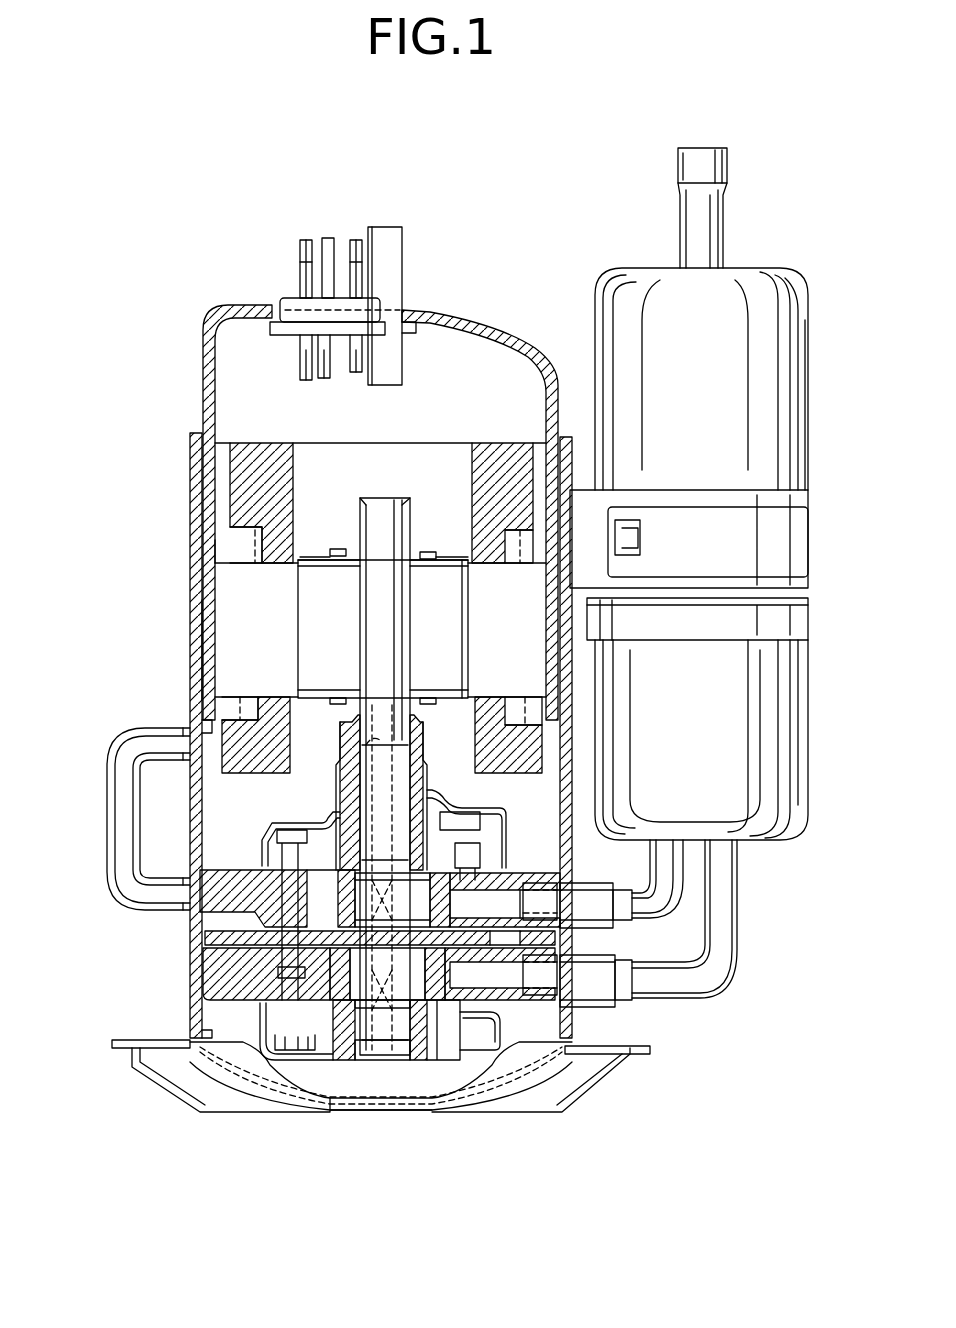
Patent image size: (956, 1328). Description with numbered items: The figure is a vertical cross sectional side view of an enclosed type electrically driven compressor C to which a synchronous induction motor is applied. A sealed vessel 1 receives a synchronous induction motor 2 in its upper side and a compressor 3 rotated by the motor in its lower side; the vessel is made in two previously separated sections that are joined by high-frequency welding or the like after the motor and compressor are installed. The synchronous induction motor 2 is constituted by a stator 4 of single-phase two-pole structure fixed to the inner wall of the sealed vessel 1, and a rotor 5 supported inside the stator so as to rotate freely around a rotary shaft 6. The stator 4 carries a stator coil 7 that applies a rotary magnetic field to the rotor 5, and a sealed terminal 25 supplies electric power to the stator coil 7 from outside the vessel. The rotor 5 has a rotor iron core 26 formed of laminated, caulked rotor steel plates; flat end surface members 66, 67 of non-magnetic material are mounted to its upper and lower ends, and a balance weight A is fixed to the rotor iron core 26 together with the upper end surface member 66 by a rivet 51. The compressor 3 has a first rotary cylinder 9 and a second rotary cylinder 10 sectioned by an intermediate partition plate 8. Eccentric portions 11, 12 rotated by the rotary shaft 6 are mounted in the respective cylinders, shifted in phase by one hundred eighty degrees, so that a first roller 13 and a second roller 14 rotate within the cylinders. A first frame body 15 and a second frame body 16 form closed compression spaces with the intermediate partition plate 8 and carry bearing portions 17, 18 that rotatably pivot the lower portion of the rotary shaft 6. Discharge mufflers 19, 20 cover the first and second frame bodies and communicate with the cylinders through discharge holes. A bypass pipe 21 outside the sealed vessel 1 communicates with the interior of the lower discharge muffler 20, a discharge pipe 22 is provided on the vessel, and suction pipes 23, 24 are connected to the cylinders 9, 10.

The sealed vessel 1 is at (215, 570).
The synchronous induction motor 2 is at (233, 603).
The compressor 3 is at (556, 835).
The stator 4 is at (215, 622).
The rotor 5 is at (315, 682).
The rotary shaft 6 is at (365, 650).
The stator coil 7 is at (245, 465).
The intermediate partition plate 8 is at (320, 938).
The first rotary cylinder 9 is at (325, 912).
The second rotary cylinder 10 is at (438, 1012).
The eccentric portion 11 is at (455, 862).
The eccentric portion 12 is at (345, 1025).
The first roller 13 is at (412, 905).
The second roller 14 is at (320, 1010).
The first frame body 15 is at (345, 790).
The second frame body 16 is at (408, 1025).
The bearing portion 17 is at (405, 803).
The bearing portion 18 is at (365, 1022).
The discharge muffler 19 is at (285, 822).
The discharge muffler 20 is at (482, 1045).
The bypass pipe 21 is at (105, 830).
The discharge pipe 22 is at (403, 270).
The suction pipe 23 is at (596, 895).
The suction pipe 24 is at (595, 995).
The sealed terminal 25 is at (290, 298).
The rotor iron core 26 is at (463, 627).
The rivet 51 is at (320, 553).
The flat end surface member 66 is at (456, 552).
The flat end surface member 67 is at (330, 700).
The balance weight A is at (218, 545).
The enclosed type electrically driven compressor C is at (518, 275).